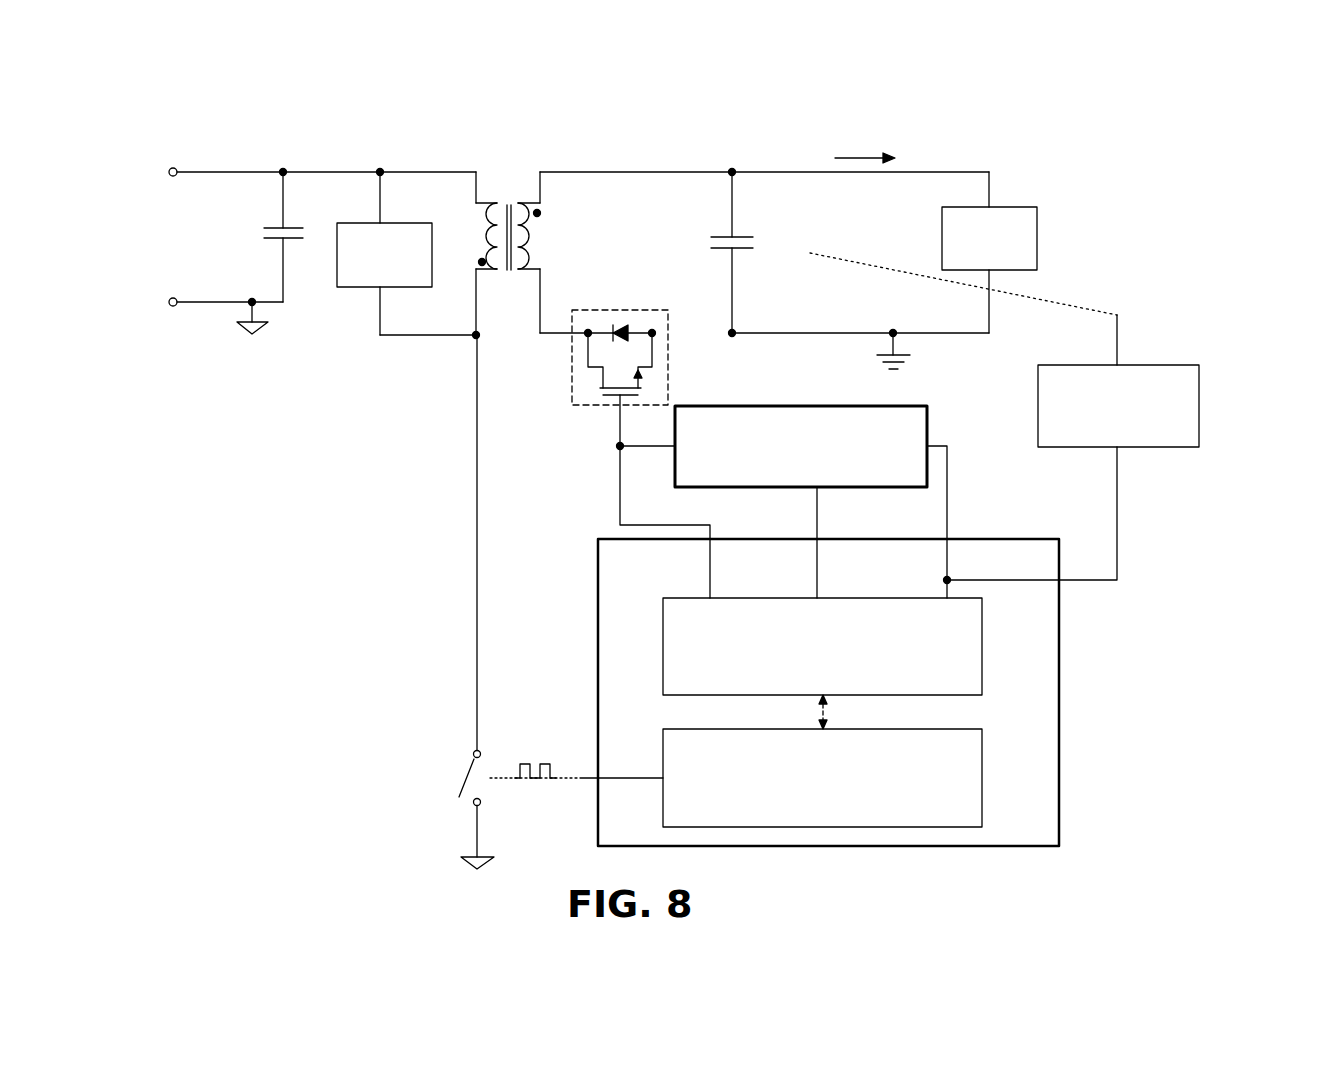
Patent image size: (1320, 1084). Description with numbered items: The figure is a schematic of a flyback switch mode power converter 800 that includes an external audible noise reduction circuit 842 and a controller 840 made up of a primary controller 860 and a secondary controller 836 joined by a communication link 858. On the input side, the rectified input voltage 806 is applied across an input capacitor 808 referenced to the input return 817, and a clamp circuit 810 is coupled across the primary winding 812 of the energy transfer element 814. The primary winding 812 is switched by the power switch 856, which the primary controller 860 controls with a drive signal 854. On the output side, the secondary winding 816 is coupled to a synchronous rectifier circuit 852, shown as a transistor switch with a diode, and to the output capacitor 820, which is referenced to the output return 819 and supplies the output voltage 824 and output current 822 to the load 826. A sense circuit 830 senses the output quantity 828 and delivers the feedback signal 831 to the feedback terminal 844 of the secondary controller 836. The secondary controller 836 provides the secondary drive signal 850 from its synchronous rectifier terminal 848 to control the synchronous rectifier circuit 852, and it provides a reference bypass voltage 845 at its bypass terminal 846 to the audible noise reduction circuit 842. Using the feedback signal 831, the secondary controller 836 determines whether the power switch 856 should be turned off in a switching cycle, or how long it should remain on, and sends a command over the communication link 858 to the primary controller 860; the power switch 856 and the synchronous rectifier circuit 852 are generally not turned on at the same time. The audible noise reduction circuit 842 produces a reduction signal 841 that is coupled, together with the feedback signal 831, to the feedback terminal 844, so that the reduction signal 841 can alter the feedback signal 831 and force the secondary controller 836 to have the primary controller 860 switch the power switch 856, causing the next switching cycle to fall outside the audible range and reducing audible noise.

The flyback switch mode power converter 800 is at (1215, 100).
The rectified input voltage 806 is at (172, 222).
The input capacitor 808 is at (295, 248).
The clamp circuit 810 is at (352, 292).
The primary winding 812 is at (476, 218).
The energy transfer element 814 is at (508, 200).
The secondary winding 816 is at (548, 228).
The input return 817 is at (249, 334).
The output return 819 is at (876, 353).
The output capacitor 820 is at (680, 230).
The output current 822 is at (880, 137).
The output voltage 824 is at (790, 232).
The load 826 is at (1040, 238).
The output quantity 828 is at (1077, 343).
The sense circuit 830 is at (1204, 371).
The feedback signal 831 is at (1172, 508).
The secondary controller 836 is at (985, 686).
The controller 840 is at (1065, 699).
The reduction signal 841 is at (984, 498).
The audible noise reduction circuit 842 is at (930, 416).
The feedback terminal 844 is at (978, 565).
The reference bypass voltage 845 is at (878, 521).
The bypass terminal BP 846 is at (822, 598).
The synchronous rectifier terminal 848 is at (704, 592).
The secondary drive signal 850 is at (575, 506).
The synchronous rectifier circuit 852 is at (624, 310).
The drive signal 854 is at (535, 748).
The power switch 856 is at (420, 780).
The communication link 858 is at (817, 712).
The primary controller 860 is at (988, 752).